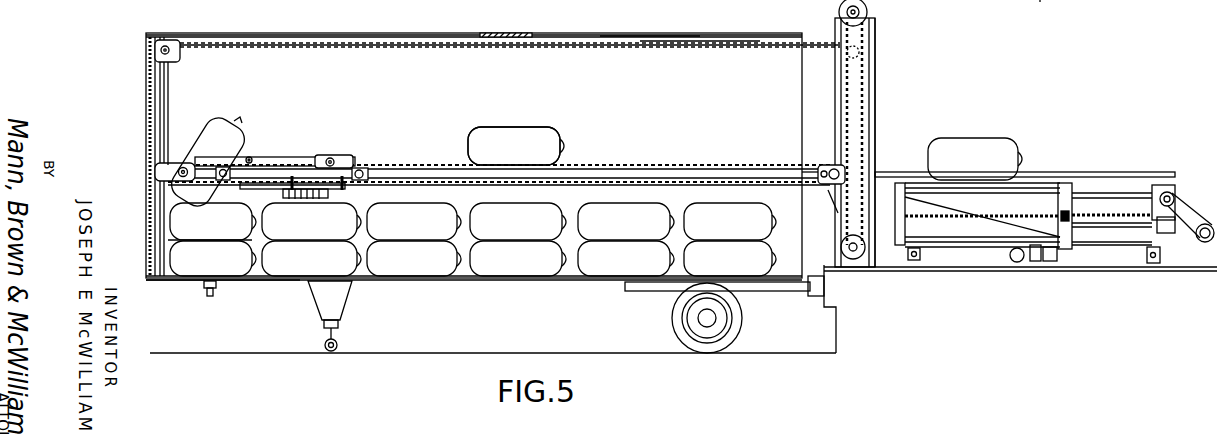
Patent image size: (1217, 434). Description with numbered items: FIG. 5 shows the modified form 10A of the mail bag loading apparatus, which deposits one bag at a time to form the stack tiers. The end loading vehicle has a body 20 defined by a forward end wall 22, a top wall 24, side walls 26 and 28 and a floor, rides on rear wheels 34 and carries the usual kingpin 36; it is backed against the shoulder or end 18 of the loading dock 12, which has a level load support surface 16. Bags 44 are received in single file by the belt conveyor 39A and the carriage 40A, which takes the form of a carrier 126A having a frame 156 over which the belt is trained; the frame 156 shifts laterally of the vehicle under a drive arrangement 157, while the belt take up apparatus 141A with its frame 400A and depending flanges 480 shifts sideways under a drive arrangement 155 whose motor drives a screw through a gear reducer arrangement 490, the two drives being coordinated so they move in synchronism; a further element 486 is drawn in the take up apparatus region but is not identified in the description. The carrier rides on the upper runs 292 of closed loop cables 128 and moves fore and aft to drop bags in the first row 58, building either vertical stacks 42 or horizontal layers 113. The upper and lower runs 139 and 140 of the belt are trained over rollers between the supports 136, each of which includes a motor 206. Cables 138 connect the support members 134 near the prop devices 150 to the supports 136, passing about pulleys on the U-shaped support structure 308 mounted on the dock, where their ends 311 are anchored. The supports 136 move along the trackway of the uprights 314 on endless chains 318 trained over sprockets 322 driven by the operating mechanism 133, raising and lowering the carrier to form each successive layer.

The modified form of loading apparatus 10A is at (116, 61).
The loading dock 12 is at (1077, 277).
The level load support surface 16 is at (888, 260).
The shoulder or end of loading dock 18 is at (820, 306).
The body 20 is at (714, 31).
The forward end wall 22 is at (148, 204).
The top wall 24 is at (506, 34).
The side wall 26 is at (642, 35).
The side wall 28 is at (575, 62).
The rear wheels 34 is at (660, 317).
The kingpin 36 is at (216, 291).
The belt conveyor 39A is at (908, 172).
The carriage 40A is at (369, 118).
The vertical stacks 42 is at (190, 281).
The bags 44 is at (525, 138).
The first row of mail bags 58 is at (180, 255).
The horizontal layers 113 is at (781, 251).
The carrier 126A is at (313, 153).
The closed loop cables 128 is at (658, 166).
The operating mechanism 133 is at (864, 10).
The support members 134 is at (183, 136).
The supports 136 is at (818, 168).
The cables 138 is at (702, 48).
The upper run of belt 139 is at (883, 172).
The lower run of belt 140 is at (895, 234).
The belt take up apparatus 141A is at (977, 257).
The prop devices 150 is at (172, 84).
The drive arrangement 155 is at (1035, 13).
The frame 156 is at (345, 157).
The drive arrangement 157 is at (300, 207).
The motor 206 is at (830, 160).
The upper run of cable 292 is at (598, 165).
The U-shaped support structure 308 is at (884, 52).
The cable ends 311 is at (830, 189).
The uprights 314 is at (878, 105).
The endless chains 318 is at (866, 78).
The sprockets 322 is at (855, 259).
The frame 400A is at (1190, 158).
The depending flanges 480 is at (937, 262).
The cylinder mount 486 is at (1045, 262).
The gear reducer arrangement 490 is at (1017, 263).